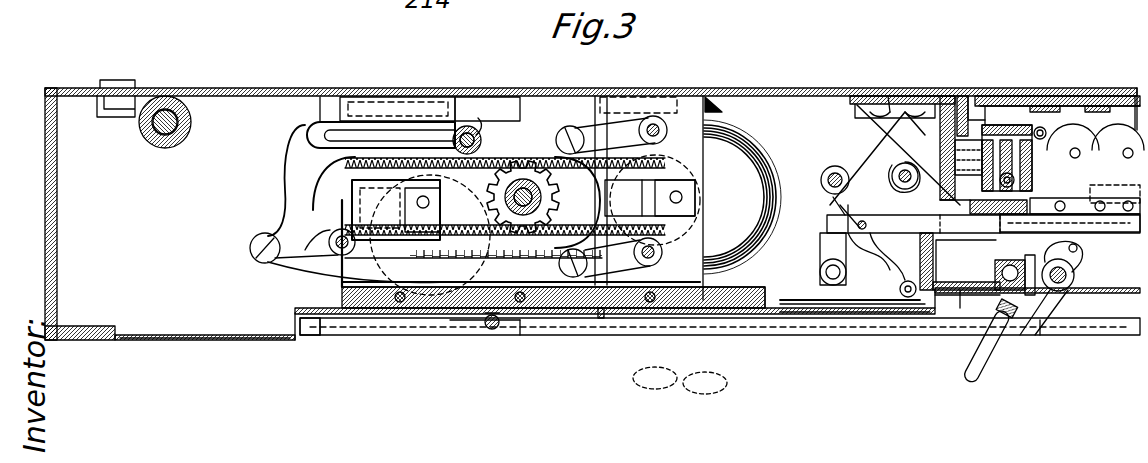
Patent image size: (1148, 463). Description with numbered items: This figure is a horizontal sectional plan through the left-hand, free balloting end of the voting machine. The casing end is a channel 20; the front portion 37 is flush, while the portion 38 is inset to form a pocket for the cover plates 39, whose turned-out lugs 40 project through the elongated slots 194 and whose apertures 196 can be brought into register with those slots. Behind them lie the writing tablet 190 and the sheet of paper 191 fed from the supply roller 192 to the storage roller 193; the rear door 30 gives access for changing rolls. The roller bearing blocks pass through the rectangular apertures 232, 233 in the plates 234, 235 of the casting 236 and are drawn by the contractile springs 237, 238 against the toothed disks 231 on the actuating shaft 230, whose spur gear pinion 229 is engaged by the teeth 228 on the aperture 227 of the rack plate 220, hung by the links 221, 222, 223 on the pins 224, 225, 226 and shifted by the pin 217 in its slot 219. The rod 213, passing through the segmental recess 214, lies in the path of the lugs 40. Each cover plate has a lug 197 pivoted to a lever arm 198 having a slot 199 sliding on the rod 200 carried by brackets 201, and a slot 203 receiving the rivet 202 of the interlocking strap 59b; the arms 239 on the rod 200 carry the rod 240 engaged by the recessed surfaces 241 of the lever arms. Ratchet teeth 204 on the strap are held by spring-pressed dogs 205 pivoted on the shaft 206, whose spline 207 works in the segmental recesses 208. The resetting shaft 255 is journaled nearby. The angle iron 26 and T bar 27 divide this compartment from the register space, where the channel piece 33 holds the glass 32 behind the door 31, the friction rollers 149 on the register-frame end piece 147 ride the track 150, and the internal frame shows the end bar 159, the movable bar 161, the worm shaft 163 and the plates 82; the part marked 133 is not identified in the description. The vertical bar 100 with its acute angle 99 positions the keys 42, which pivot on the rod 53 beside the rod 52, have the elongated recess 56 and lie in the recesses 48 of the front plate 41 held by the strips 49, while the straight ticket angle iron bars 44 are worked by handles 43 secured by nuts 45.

The channel 20 is at (45, 165).
The shaft 255 is at (175, 112).
The casing portion 37 is at (180, 340).
The plate 234 is at (360, 97).
The door 30 is at (428, 97).
The elongated slot 219 is at (322, 97).
The rack plate 220 is at (300, 150).
The pin 217 is at (475, 126).
The helically coiled contractile spring 237 is at (482, 122).
The elongated aperture 227 is at (285, 183).
The storage roller 193 is at (280, 218).
The link 221 is at (330, 245).
The pin 224 is at (300, 275).
The helically coiled contractile spring 238 is at (522, 248).
The actuating shaft 230 is at (392, 180).
The spur gear pinion 229 is at (540, 158).
The casting 236 is at (375, 290).
The elongated rectangular aperture 232 is at (398, 192).
The elongated rectangular aperture 233 is at (622, 176).
The pin 225 is at (720, 180).
The pin 226 is at (660, 252).
The link 223 is at (600, 264).
The link 222 is at (625, 97).
The plate 235 is at (680, 97).
The toothed disk 231 is at (720, 120).
The supply roller 192 is at (745, 185).
The spring-pressed dog 205 is at (840, 96).
The friction roller 149 is at (925, 120).
The segmental recess 208 is at (855, 96).
The rod 200 is at (838, 165).
The elongated slot 199 is at (820, 176).
The shaft 206 is at (905, 160).
The spline 207 is at (884, 96).
The bracket 201 is at (835, 165).
The lever arm 198 is at (828, 200).
The arm 239 is at (830, 214).
The elongated slot 203 is at (822, 242).
The connecting rivet 202 is at (858, 270).
The lug 197 is at (888, 300).
The rod 240 is at (815, 295).
The engaging surface 241 is at (858, 305).
The angle iron 26 is at (922, 96).
The channel piece 33 is at (975, 97).
The glass covering 32 is at (1010, 97).
The track 150 is at (1030, 97).
The plate 133 is at (1100, 70).
The door 31 is at (1137, 96).
The end piece 147 is at (1010, 120).
The bar 161 is at (1020, 151).
The vertical shaft 163 is at (1015, 178).
The plate 82 is at (1092, 157).
The vertical end bar 159 is at (1020, 187).
The ratchet teeth 204 is at (900, 217).
The vertical bar 100 is at (1065, 227).
The strip 49 is at (1005, 295).
The interlocking strap 59b is at (966, 261).
The rod 52 is at (1010, 265).
The rod 53 is at (1050, 265).
The elongated recess 56 is at (1082, 247).
The acute angle 99 is at (1075, 273).
The recess 48 is at (1062, 300).
The front plate 41 is at (1110, 335).
The casing portion 38 is at (315, 335).
The handle 43 is at (965, 392).
The nut 45 is at (1008, 330).
The operating key 42 is at (1035, 335).
The straight ticket angle iron bar 44 is at (962, 310).
The T bar 27 is at (932, 310).
The aperture 196 is at (850, 312).
The cover plate 39 is at (460, 308).
The teeth 228 is at (410, 300).
The elongated slot 194 is at (493, 330).
The operating end 40 is at (601, 318).
The writing tablet 190 is at (656, 378).
The sheet of paper 191 is at (706, 383).
The segmental recess 214 is at (455, 335).
The rod 213 is at (520, 335).